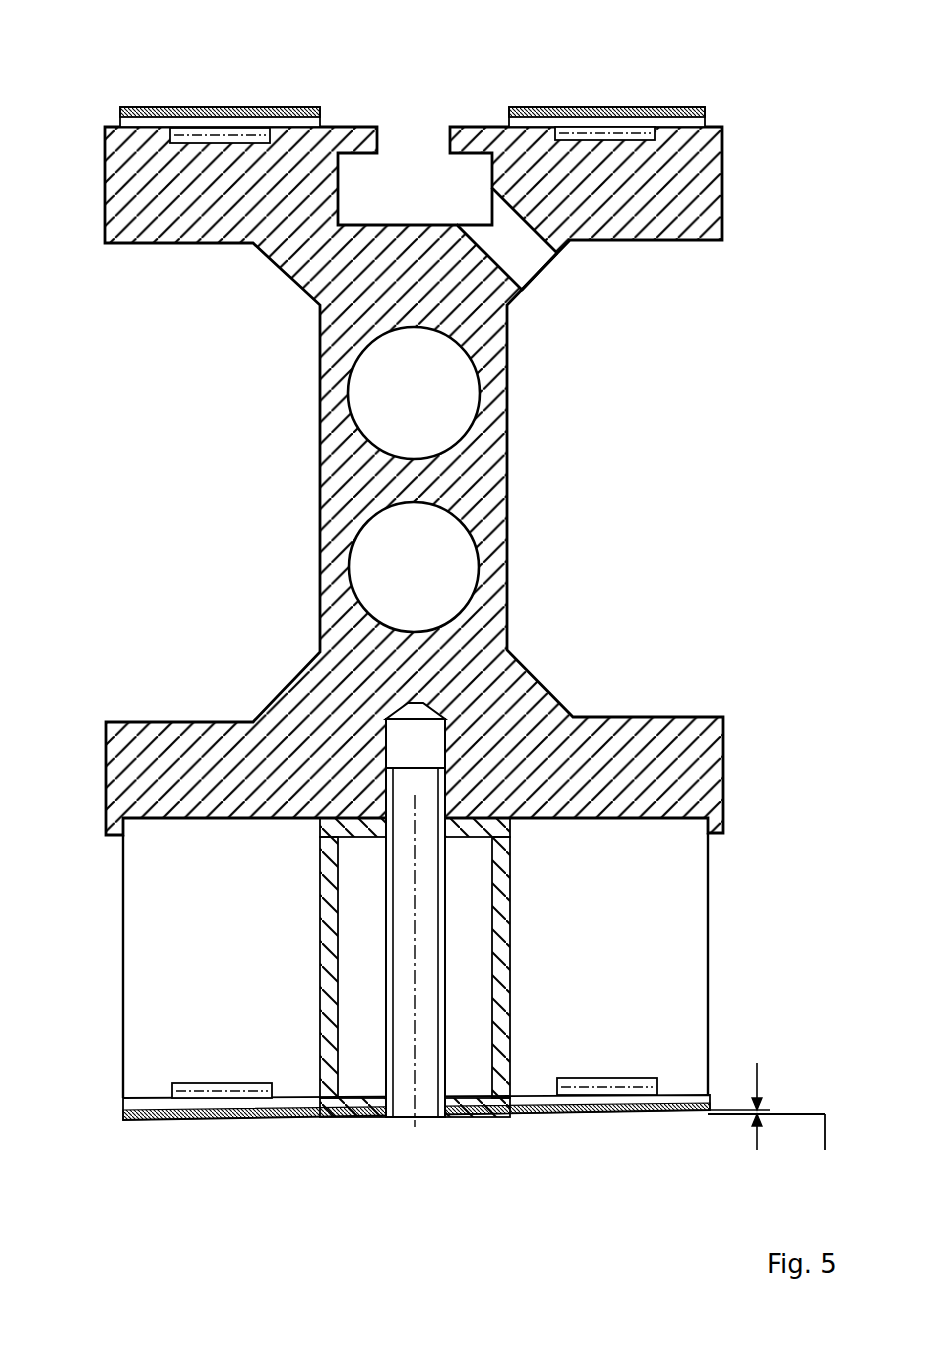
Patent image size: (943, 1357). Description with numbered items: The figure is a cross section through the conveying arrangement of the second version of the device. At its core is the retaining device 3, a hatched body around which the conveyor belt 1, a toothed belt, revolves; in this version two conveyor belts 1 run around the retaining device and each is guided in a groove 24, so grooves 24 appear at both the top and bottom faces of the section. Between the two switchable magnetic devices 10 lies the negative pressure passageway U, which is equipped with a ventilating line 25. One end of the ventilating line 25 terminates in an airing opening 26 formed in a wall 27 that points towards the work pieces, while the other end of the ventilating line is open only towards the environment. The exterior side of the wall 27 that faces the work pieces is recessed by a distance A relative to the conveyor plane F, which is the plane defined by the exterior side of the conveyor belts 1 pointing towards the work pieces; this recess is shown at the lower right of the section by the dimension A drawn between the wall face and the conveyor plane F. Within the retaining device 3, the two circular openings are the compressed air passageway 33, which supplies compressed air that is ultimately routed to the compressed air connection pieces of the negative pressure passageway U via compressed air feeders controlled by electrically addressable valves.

The conveyor belt 1 is at (538, 100).
The retaining device 3 is at (638, 228).
The switchable magnetic device 10 is at (672, 935).
The groove 24 is at (655, 128).
The ventilating line 25 is at (447, 993).
The airing opening 26 is at (440, 1120).
The wall 27 is at (347, 1120).
The compressed air passageway 33 is at (455, 400).
The negative pressure passageway U is at (363, 995).
The distance A is at (739, 1135).
The conveyor plane F is at (775, 1150).